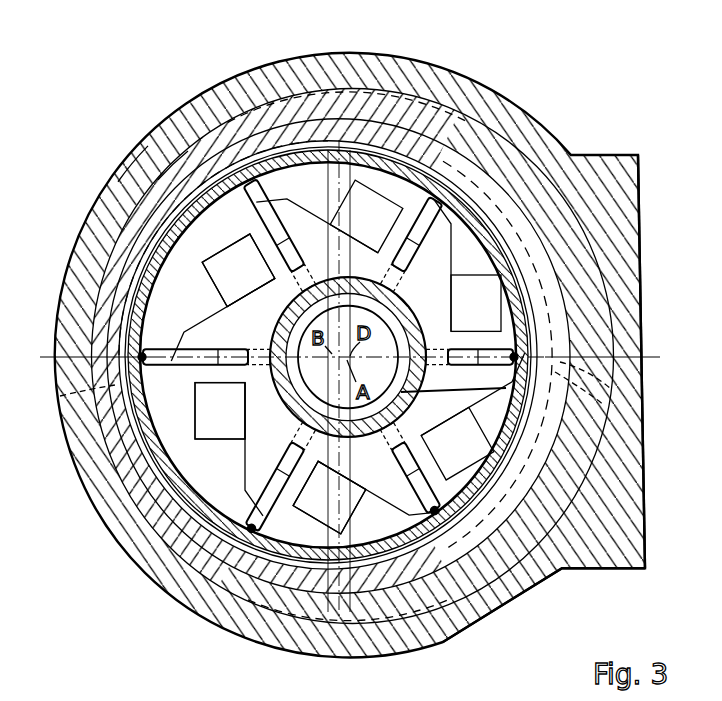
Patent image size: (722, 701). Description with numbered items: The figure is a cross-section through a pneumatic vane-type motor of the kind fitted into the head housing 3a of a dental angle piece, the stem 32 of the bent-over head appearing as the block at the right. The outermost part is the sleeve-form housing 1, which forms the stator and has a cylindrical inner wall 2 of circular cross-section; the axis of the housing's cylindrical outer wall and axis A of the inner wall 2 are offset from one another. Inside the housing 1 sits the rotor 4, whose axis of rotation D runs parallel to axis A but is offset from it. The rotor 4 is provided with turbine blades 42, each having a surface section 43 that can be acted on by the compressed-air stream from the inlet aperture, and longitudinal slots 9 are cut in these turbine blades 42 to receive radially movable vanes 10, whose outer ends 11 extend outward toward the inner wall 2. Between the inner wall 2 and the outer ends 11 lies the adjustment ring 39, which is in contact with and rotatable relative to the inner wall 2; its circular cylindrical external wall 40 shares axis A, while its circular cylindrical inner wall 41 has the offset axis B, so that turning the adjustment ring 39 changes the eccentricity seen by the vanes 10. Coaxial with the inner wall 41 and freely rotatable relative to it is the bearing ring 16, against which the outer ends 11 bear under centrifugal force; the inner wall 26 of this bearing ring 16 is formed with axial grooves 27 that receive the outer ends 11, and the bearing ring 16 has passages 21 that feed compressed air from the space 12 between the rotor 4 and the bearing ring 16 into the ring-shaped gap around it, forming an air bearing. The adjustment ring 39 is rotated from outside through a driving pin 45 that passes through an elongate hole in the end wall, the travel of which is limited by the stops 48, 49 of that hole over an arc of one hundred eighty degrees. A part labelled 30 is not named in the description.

The housing 1 is at (284, 78).
The cylindrical inner wall 2 is at (444, 136).
The head housing 3a is at (538, 575).
The rotor 4 is at (470, 396).
The longitudinal slots 9 is at (226, 346).
The vanes 10 is at (162, 359).
The outer ends 11 is at (512, 359).
The space 12 is at (150, 178).
The bearing ring 16 is at (494, 213).
The passages 21 is at (62, 358).
The inner wall 26 is at (236, 182).
The axial grooves 27 is at (233, 118).
The housing wall 30 is at (113, 200).
The stem 32 is at (598, 570).
The adjustment ring 39 is at (430, 600).
The circular cylindrical external wall 40 is at (138, 226).
The circular cylindrical inner wall 41 is at (135, 268).
The turbine blades 42 is at (255, 450).
The surface section 43 is at (232, 266).
The driving pin 45 is at (612, 390).
The stop 48 is at (604, 405).
The stop 49 is at (60, 397).